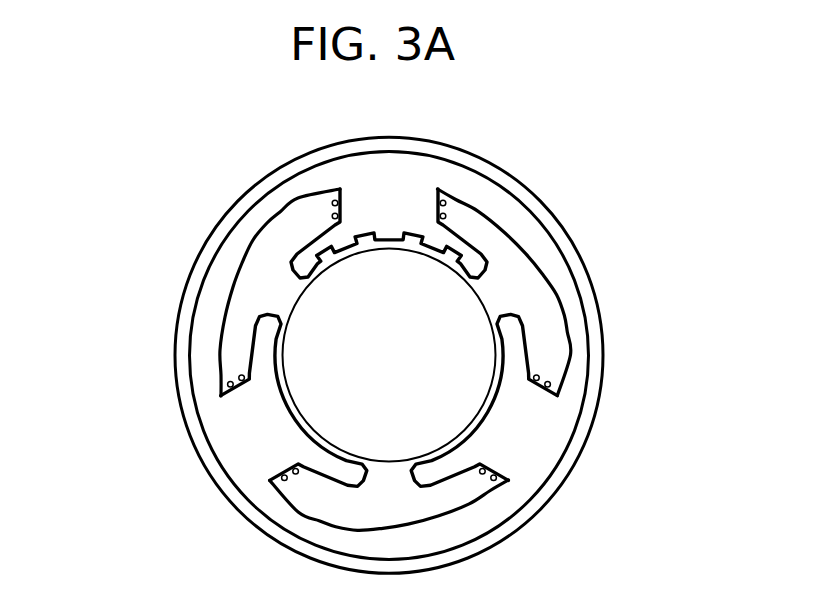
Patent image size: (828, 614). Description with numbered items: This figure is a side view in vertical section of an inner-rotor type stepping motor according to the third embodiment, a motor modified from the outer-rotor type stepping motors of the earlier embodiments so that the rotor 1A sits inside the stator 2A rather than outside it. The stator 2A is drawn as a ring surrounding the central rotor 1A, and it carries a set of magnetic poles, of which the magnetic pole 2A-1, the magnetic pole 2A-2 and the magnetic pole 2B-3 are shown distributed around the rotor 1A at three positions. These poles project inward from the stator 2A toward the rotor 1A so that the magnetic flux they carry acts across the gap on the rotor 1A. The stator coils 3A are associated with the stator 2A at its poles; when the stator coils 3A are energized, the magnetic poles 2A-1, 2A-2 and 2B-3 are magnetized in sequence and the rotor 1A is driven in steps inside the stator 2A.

The rotor 1A is at (467, 383).
The stator 2A is at (299, 198).
The magnetic pole of the stator 2A-1 is at (418, 203).
The magnetic pole of the stator 2A-2 is at (263, 362).
The magnetic pole of the stator 2B-3 is at (490, 443).
The stator coils 3A is at (447, 208).